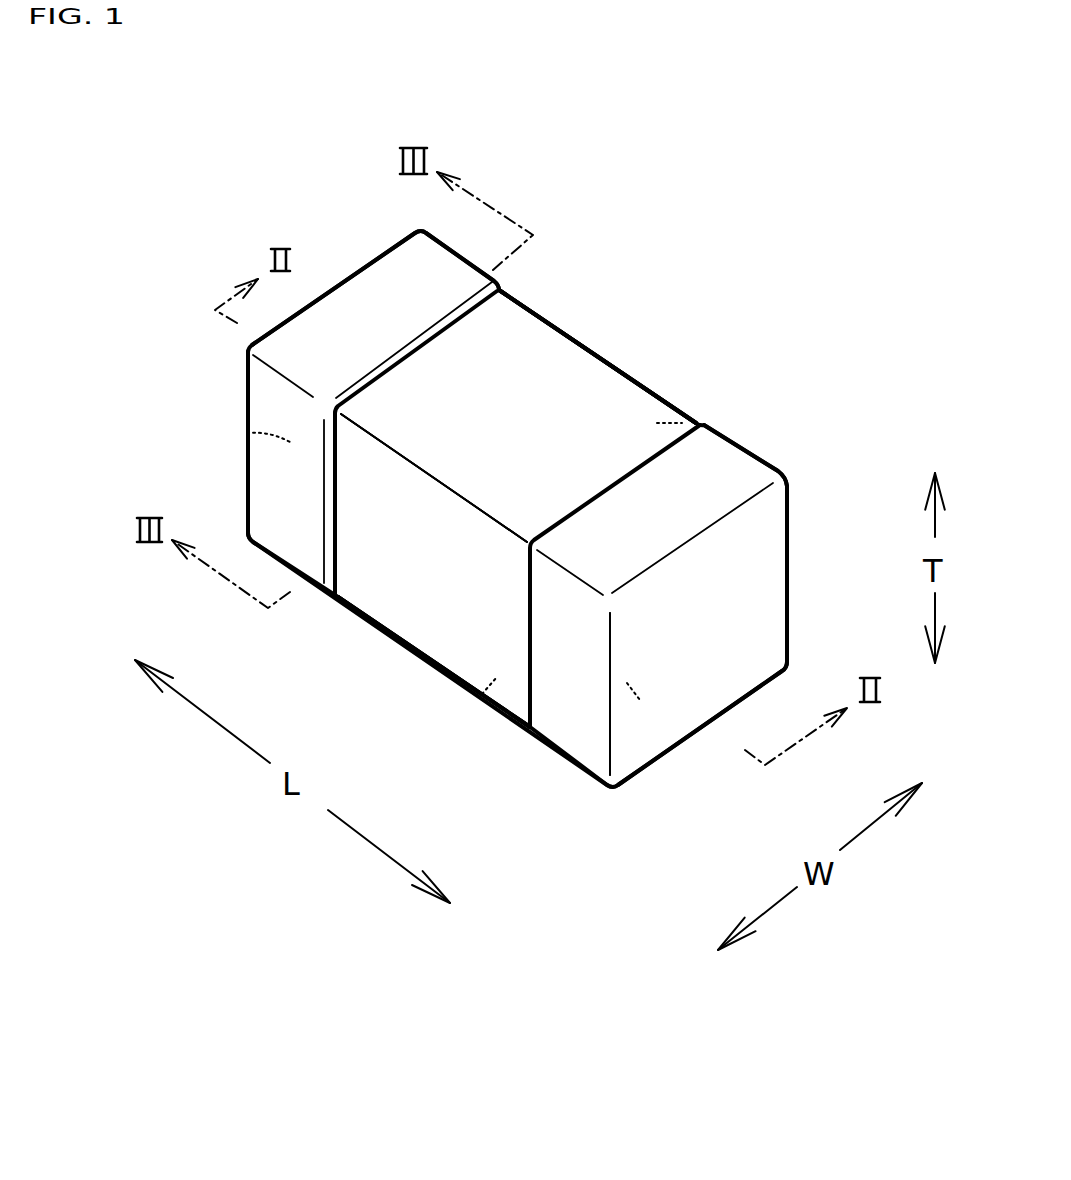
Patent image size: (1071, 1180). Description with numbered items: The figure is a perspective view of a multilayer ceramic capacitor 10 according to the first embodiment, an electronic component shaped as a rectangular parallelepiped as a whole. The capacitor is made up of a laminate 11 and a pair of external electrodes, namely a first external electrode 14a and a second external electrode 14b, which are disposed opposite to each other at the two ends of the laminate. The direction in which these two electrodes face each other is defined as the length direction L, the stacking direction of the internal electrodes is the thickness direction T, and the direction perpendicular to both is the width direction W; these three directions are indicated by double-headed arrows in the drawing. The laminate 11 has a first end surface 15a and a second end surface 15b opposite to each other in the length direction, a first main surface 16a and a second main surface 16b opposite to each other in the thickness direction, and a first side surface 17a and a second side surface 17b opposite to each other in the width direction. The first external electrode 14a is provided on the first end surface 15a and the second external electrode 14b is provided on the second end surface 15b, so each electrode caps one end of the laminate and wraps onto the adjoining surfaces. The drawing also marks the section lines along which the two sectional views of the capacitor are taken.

The multilayer ceramic capacitor 10 is at (753, 243).
The laminate 11 is at (575, 375).
The first external electrode 14a is at (383, 278).
The second external electrode 14b is at (735, 457).
The first end surface 15a is at (247, 433).
The second end surface 15b is at (640, 700).
The first main surface 16a is at (633, 408).
The second main surface 16b is at (482, 694).
The first side surface 17a is at (438, 613).
The second side surface 17b is at (690, 423).